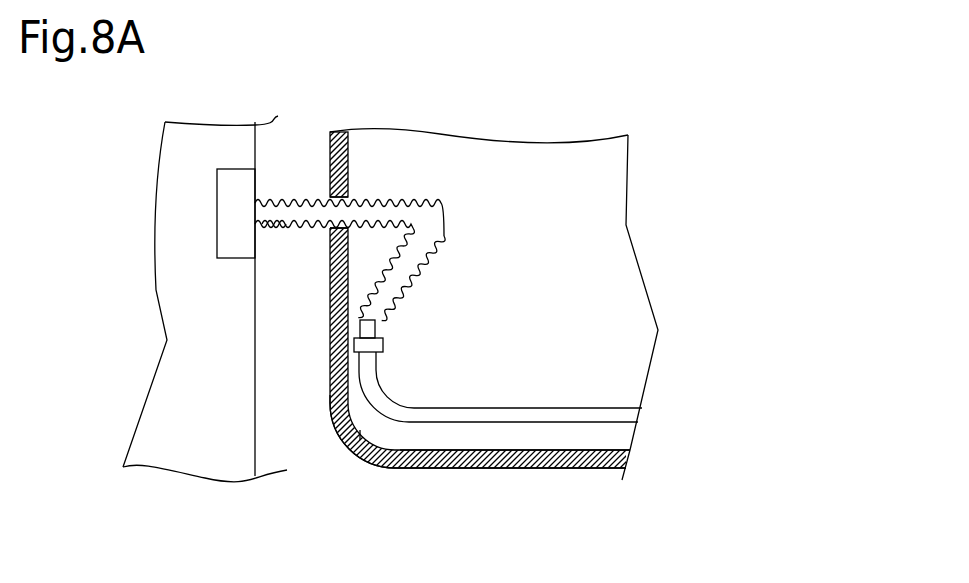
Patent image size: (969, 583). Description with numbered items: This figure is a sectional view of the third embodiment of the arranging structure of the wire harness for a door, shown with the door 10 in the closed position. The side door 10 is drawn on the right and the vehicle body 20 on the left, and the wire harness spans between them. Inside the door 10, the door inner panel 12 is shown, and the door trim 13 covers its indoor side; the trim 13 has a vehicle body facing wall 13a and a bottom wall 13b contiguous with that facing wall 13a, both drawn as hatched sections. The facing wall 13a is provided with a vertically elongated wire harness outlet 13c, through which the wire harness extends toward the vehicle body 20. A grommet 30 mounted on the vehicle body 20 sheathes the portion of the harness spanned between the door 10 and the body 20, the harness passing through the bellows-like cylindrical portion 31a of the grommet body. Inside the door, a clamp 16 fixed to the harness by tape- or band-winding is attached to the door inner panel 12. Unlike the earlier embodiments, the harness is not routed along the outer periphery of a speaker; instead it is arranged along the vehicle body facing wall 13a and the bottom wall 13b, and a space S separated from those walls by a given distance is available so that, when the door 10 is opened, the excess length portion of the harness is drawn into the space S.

The side door 10 is at (530, 139).
The door inner panel 12 is at (610, 208).
The door trim 13 is at (570, 468).
The vehicle body facing wall 13a is at (330, 166).
The bottom wall 13b is at (511, 467).
The wire harness outlet 13c is at (323, 230).
The clamp 16 is at (333, 423).
The vehicle body 20 is at (213, 117).
The grommet 30 is at (220, 237).
The bellows-like cylindrical portion 31a is at (280, 226).
The space S is at (378, 422).